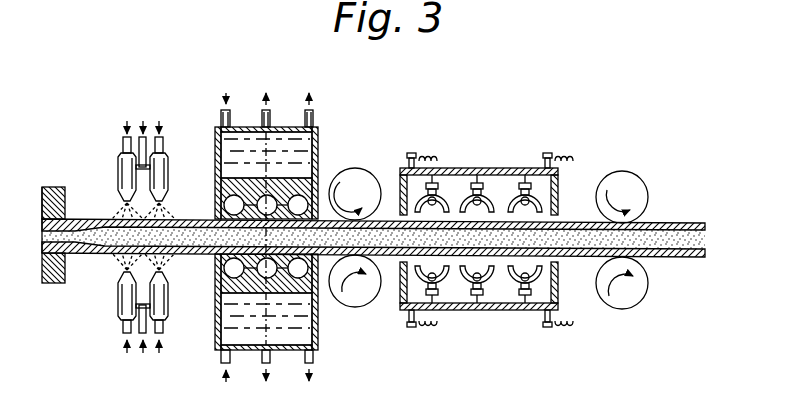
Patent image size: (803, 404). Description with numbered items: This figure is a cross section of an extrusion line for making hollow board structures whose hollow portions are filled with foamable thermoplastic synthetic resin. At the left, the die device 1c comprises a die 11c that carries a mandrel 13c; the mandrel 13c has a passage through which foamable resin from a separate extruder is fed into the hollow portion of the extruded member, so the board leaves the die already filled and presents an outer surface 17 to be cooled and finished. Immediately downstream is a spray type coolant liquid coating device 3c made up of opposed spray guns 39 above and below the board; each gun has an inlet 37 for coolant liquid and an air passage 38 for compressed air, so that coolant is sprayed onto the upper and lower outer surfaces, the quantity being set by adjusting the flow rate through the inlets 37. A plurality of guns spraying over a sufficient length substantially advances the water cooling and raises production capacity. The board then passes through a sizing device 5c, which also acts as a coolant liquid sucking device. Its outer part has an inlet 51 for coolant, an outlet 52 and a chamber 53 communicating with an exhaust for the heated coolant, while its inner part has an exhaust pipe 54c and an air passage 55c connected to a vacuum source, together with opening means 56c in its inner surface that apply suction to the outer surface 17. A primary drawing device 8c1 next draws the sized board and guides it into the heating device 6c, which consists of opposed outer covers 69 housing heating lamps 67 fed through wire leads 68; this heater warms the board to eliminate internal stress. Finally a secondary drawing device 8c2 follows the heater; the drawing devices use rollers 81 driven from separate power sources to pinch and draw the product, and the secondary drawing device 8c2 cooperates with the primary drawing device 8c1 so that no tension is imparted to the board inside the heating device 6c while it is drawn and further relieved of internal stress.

The die device 1c is at (58, 153).
The die 11c is at (64, 188).
The mandrel 13c is at (71, 222).
The outer surface 17 is at (172, 227).
The spray type coolant liquid coating device 3c is at (158, 203).
The inlet 37 is at (145, 138).
The air passage 38 is at (161, 144).
The spray gun 39 is at (168, 166).
The sizing device 5c is at (272, 206).
The inlet 51 is at (228, 110).
The outlet 52 is at (314, 110).
The chamber 53 is at (266, 155).
The exhaust pipe 54c is at (269, 110).
The air passage 55c is at (220, 193).
The opening means 56c is at (220, 269).
The primary drawing device 8c1 is at (355, 104).
The heating device 6c is at (486, 192).
The heating element 67 is at (438, 189).
The wire leads 68 is at (436, 159).
The outer cover 69 is at (486, 174).
The secondary drawing device 8c2 is at (634, 198).
The rollers 81 is at (640, 183).